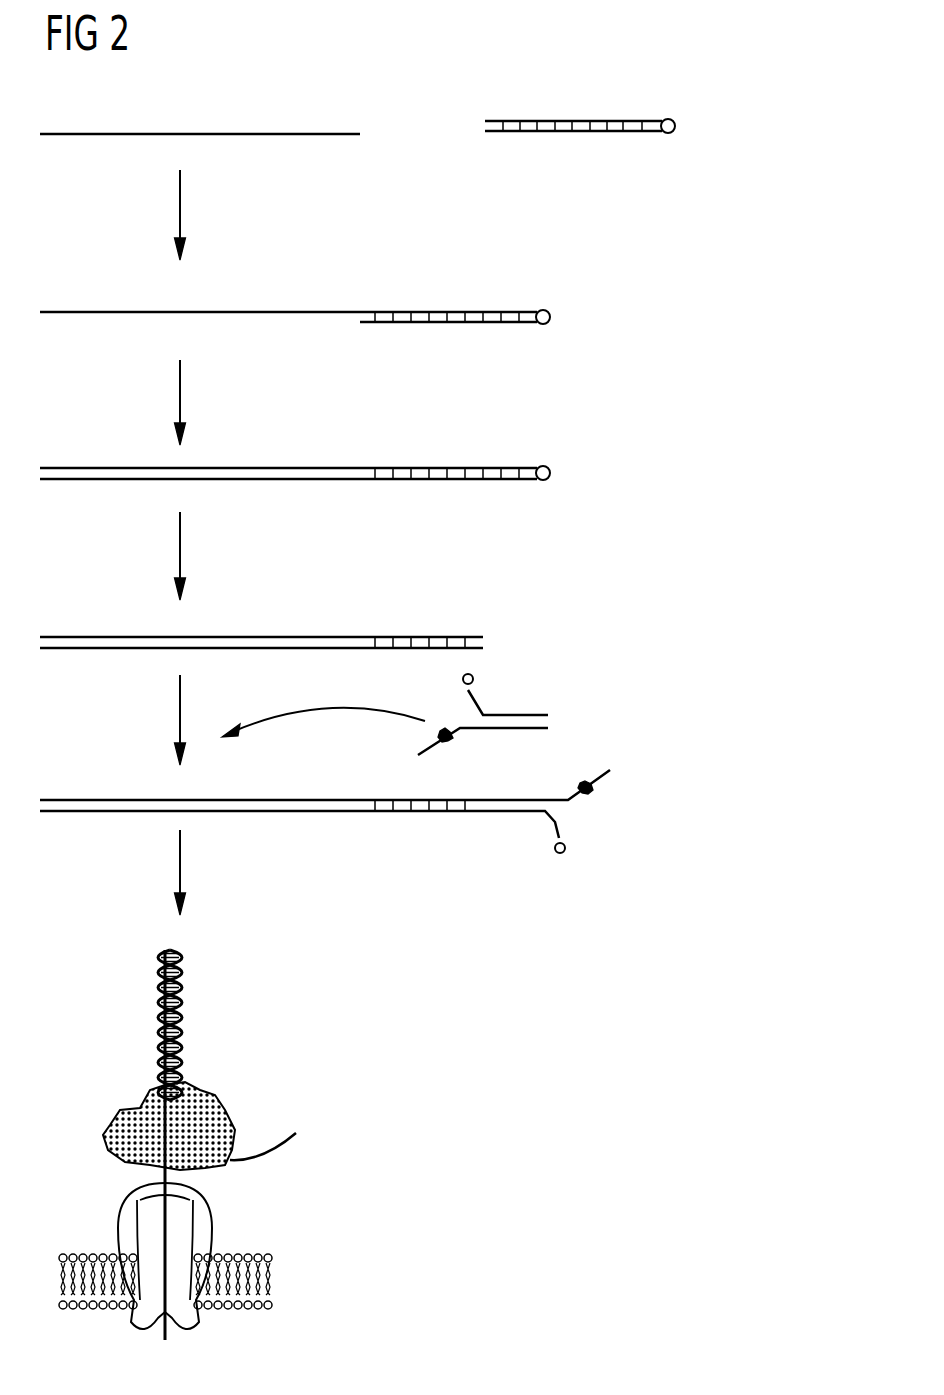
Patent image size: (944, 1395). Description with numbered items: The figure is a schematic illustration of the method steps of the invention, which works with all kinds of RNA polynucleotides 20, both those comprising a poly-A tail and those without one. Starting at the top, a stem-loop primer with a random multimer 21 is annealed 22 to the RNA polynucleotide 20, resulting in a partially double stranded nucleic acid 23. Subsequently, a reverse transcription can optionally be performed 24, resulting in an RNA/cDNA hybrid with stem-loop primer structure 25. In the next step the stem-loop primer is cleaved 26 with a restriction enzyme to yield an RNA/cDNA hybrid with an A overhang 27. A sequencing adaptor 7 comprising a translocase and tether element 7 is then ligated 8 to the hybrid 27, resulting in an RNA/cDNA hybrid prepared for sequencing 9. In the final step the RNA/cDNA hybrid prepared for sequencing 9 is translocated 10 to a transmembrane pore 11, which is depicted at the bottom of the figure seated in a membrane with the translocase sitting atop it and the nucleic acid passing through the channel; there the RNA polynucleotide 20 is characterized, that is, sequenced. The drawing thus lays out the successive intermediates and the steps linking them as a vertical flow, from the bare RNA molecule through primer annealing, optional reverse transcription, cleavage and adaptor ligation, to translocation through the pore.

The RNA polynucleotide 20 is at (238, 126).
The stem-loop primer with a random multimer 21 is at (611, 118).
The annealing step 22 is at (180, 205).
The partially double stranded nucleic acid 23 is at (556, 317).
The reverse transcription step 24 is at (180, 393).
The RNA/cDNA hybrid with stem-loop primer structure 25 is at (556, 473).
The cleaving step 26 is at (180, 555).
The RNA/cDNA hybrid with an A overhang 27 is at (500, 645).
The ligating step 8 is at (178, 716).
The sequencing adaptor comprising a translocase and tether element 7 is at (555, 722).
The RNA/cDNA hybrid prepared for sequencing 9 is at (567, 815).
The translocating step 10 is at (180, 868).
The transmembrane pore 11 is at (228, 1222).